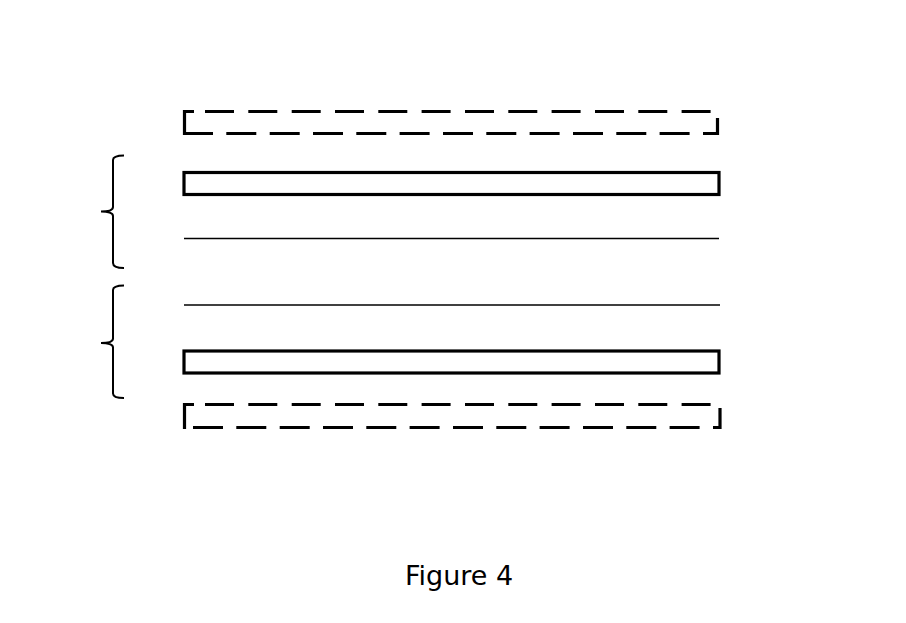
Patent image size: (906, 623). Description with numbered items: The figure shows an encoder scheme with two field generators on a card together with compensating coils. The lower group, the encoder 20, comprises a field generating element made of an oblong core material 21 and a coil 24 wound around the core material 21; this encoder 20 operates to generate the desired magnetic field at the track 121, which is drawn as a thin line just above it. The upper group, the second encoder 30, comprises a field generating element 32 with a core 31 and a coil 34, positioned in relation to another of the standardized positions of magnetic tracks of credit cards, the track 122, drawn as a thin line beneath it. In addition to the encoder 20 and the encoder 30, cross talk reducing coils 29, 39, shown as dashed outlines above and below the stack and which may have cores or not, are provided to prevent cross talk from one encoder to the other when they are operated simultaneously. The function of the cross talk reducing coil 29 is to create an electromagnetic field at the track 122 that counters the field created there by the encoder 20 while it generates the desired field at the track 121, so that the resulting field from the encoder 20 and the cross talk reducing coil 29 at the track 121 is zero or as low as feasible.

The cross talk reducing coil 29 is at (232, 98).
The field generating element 32 is at (360, 155).
The core 31 is at (433, 169).
The coil 34 is at (526, 169).
The standardized position of magnetic track 122 is at (576, 225).
The track 121 is at (733, 303).
The core material 21 is at (474, 368).
The coil 24 is at (571, 369).
The cross talk reducing coil 39 is at (332, 432).
The second encoder 30 is at (83, 212).
The encoder 20 is at (83, 342).